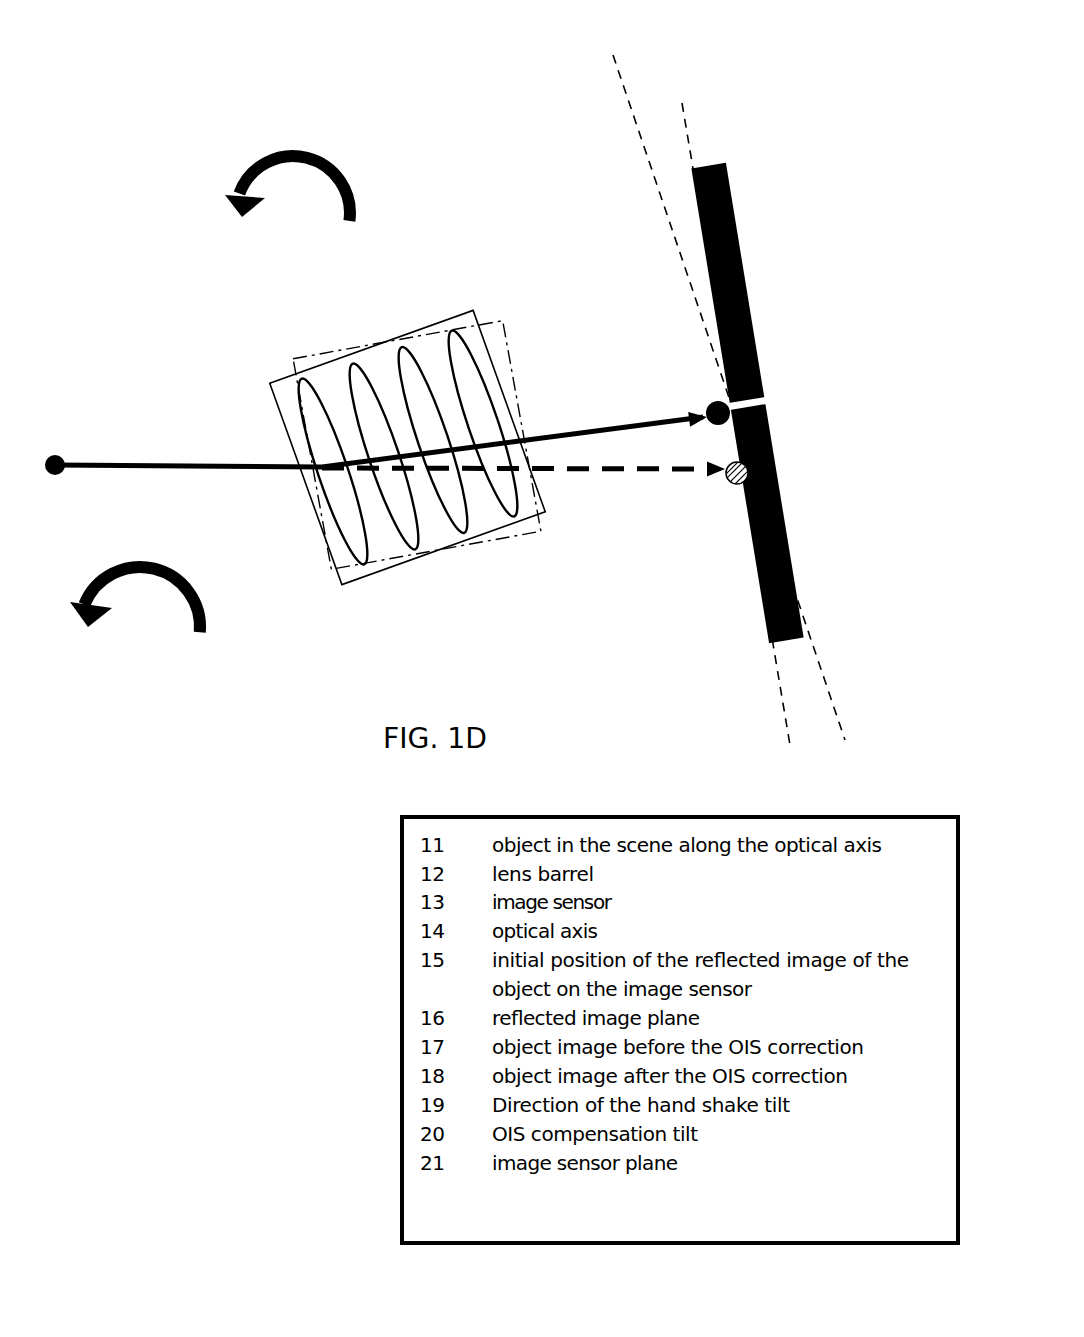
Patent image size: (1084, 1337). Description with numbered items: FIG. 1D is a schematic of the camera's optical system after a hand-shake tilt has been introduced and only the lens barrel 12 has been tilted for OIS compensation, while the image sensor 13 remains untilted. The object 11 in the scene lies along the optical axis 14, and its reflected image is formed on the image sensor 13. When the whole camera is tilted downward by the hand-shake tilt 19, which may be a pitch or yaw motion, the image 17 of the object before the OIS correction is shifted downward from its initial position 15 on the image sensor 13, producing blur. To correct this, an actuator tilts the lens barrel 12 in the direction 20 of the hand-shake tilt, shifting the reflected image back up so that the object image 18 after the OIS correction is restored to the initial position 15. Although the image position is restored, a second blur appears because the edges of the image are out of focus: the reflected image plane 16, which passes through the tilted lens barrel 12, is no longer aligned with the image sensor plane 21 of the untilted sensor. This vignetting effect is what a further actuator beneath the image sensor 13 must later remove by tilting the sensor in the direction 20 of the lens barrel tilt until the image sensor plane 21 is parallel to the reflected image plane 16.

The object 11 is at (51, 444).
The lens barrel 12 is at (433, 572).
The image sensor 13 is at (745, 268).
The optical axis 14 is at (165, 462).
The initial position 15 is at (772, 407).
The reflected image plane 16 is at (618, 70).
The object image before the OIS correction 17 is at (744, 497).
The object image after the OIS correction 18 is at (711, 395).
The hand-shake tilt 19 is at (355, 186).
The OIS compensation tilt 20 is at (141, 609).
The image sensor plane 21 is at (690, 132).